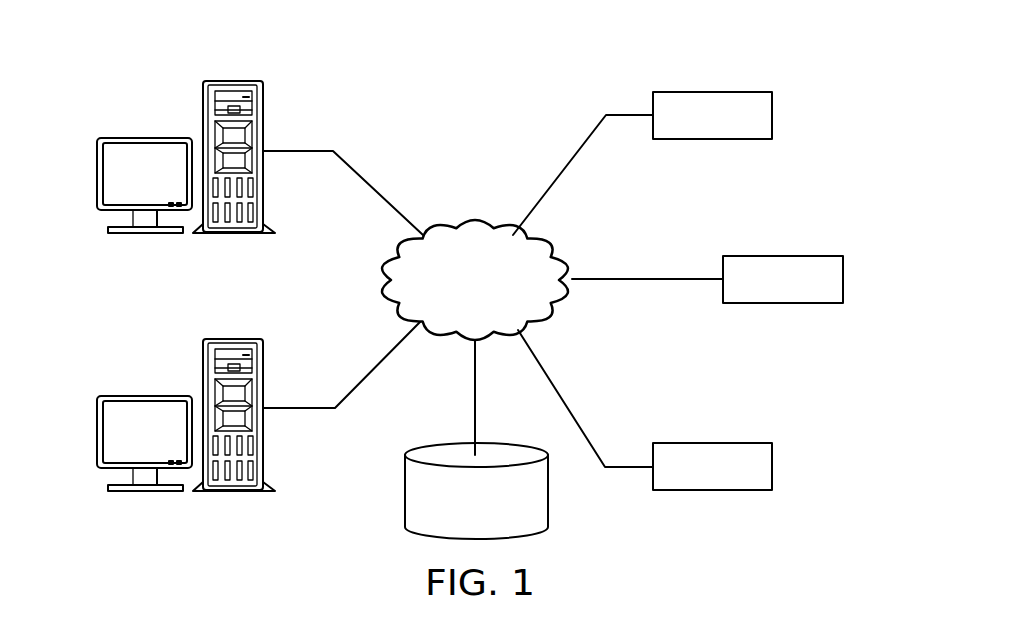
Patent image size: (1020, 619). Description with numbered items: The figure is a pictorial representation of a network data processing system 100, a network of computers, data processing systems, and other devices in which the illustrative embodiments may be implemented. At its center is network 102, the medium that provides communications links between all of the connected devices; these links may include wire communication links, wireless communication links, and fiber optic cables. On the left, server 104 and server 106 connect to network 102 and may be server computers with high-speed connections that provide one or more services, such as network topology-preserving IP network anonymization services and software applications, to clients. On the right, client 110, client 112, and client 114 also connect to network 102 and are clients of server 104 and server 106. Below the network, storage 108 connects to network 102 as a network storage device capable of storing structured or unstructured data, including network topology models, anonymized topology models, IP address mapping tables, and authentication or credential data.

The network data processing system 100 is at (343, 63).
The network 102 is at (447, 226).
The server 104 is at (97, 175).
The server 106 is at (97, 432).
The storage 108 is at (405, 492).
The client 110 is at (772, 105).
The client 112 is at (843, 290).
The client 114 is at (772, 478).